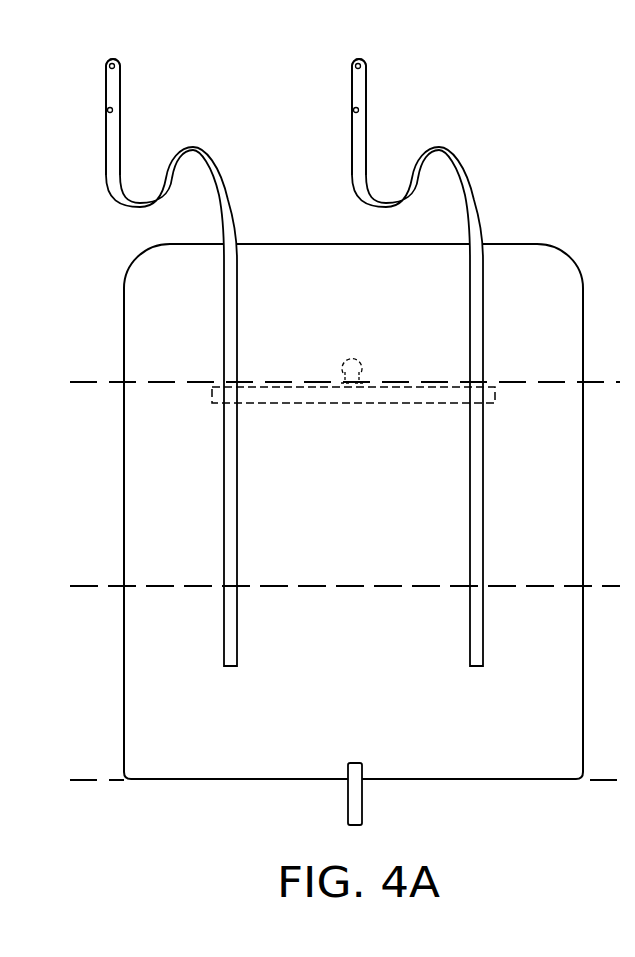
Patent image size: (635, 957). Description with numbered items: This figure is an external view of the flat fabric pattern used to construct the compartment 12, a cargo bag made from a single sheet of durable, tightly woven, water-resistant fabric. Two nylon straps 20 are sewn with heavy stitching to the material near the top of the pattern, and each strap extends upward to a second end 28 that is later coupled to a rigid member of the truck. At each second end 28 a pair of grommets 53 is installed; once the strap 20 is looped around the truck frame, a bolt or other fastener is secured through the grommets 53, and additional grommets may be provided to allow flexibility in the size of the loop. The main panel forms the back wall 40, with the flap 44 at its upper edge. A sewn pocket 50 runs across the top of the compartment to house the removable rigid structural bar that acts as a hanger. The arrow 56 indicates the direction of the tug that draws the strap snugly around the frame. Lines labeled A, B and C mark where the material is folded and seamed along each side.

The compartment 12 is at (514, 109).
The strap 20 is at (228, 167).
The second end 28 is at (121, 87).
The back wall 40 is at (123, 484).
The flap 44 is at (328, 243).
The pocket 50 is at (377, 404).
The grommets 53 is at (106, 106).
The arrow 56 is at (348, 803).